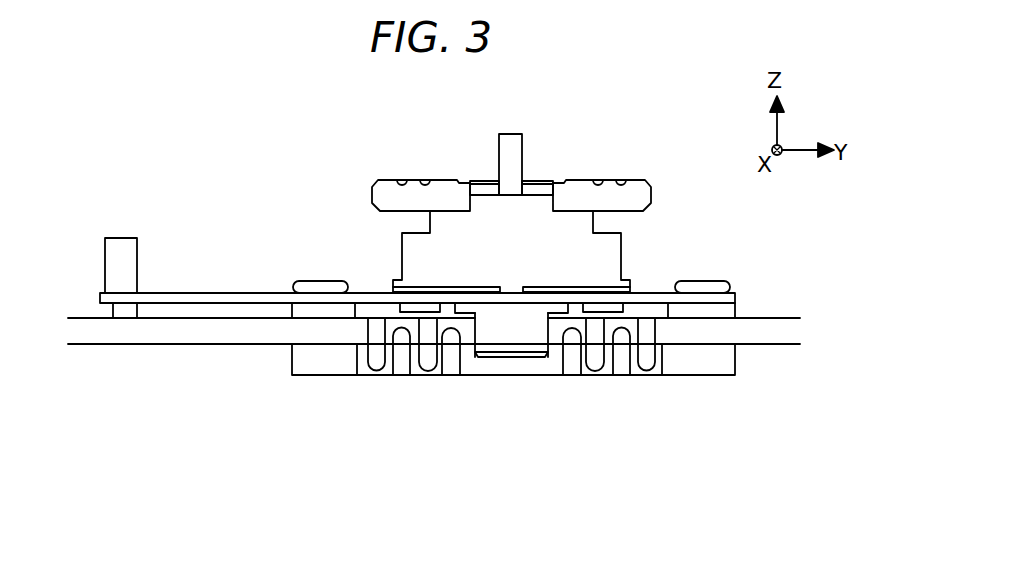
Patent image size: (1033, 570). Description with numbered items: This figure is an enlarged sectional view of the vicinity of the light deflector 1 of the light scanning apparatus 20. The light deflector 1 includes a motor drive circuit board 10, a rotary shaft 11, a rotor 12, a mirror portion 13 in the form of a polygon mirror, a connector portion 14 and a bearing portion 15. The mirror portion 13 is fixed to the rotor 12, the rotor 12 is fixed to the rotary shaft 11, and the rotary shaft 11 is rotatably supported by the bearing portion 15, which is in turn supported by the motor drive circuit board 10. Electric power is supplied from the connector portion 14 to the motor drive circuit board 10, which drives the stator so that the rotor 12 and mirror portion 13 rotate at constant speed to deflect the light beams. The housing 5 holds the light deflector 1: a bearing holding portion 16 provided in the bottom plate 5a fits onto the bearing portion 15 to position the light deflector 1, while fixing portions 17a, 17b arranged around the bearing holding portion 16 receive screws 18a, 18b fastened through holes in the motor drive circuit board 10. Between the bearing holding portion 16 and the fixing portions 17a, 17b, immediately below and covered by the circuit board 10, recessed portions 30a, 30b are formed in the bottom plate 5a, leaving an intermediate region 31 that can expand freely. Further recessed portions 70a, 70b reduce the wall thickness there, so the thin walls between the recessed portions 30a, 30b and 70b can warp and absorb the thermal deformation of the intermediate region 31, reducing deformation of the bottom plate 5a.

The light deflector 1 is at (637, 156).
The housing 5 is at (75, 345).
The bottom plate 5a is at (225, 333).
The motor drive circuit board 10 is at (198, 293).
The rotary shaft 11 is at (523, 137).
The rotor 12 is at (402, 252).
The mirror portion 13 is at (383, 179).
The connector portion 14 is at (108, 237).
The bearing portion 15 is at (522, 343).
The bearing holding portion 16 is at (483, 367).
The fixing portion 17a is at (700, 312).
The fixing portion 17b is at (313, 308).
The screw 18a is at (713, 281).
The screw 18b is at (305, 280).
The light scanning apparatus 20 is at (244, 153).
The recessed portion 30a is at (428, 366).
The recessed portion 30b is at (380, 368).
The intermediate region 31 is at (394, 326).
The recessed portion 70a is at (450, 373).
The recessed portion 70b is at (398, 373).